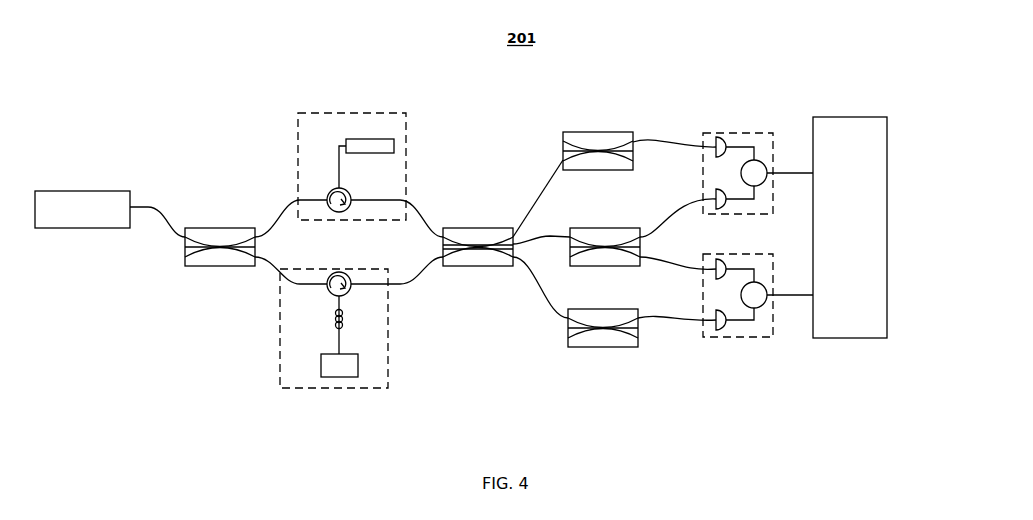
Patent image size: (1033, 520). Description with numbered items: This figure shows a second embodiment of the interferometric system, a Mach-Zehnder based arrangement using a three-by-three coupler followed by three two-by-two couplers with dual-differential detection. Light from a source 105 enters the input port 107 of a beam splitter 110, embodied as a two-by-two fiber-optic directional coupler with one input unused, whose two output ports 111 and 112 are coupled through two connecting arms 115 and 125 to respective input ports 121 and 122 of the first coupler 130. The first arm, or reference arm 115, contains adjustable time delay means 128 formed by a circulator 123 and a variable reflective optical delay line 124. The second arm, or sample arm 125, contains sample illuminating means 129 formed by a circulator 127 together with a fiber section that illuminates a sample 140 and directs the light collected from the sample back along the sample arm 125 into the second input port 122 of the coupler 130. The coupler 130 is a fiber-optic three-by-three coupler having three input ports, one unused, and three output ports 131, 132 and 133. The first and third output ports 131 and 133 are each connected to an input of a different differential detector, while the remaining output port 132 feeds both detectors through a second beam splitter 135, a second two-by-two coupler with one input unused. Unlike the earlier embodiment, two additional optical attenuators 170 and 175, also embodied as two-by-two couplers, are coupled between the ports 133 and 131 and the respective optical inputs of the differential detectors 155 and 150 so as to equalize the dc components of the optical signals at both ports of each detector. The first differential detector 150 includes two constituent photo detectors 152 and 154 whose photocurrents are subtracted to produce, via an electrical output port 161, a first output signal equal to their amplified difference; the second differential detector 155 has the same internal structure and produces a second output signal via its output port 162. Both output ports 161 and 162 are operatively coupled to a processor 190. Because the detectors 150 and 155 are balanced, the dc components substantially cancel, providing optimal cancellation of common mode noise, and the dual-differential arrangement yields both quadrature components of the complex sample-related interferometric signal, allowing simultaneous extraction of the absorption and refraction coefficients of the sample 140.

The light source 105 is at (92, 191).
The input port 107 is at (180, 227).
The first coupler 110 is at (222, 228).
The output port 111 is at (278, 211).
The output port 112 is at (268, 269).
The reference arm 115 is at (416, 178).
The input port 121 is at (442, 228).
The second input port 122 is at (445, 268).
The circulator 123 is at (350, 210).
The variable reflective optical delay line 124 is at (360, 139).
The sample arm 125 is at (405, 310).
The circulator 127 is at (330, 272).
The first sensing unit 128 is at (310, 113).
The second sensing unit 129 is at (302, 388).
The 3×3 coupler 130 is at (473, 228).
The first output port 131 is at (528, 205).
The second output port 132 is at (528, 240).
The third output port 133 is at (525, 273).
The second beam splitter 135 is at (605, 228).
The sample 140 is at (345, 378).
The first differential detector 150 is at (751, 161).
The photo detector 152 is at (720, 133).
The photo detector 154 is at (722, 214).
The second differential detector 155 is at (742, 337).
The output port 161 is at (780, 167).
The output port 162 is at (775, 290).
The optical attenuator 170 is at (620, 348).
The optical attenuator 175 is at (612, 132).
The processor 190 is at (863, 117).